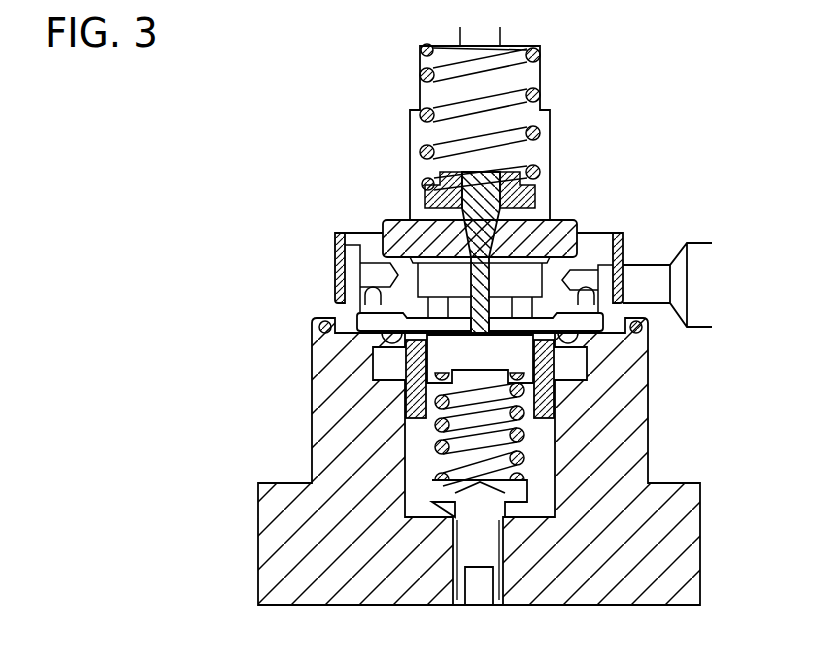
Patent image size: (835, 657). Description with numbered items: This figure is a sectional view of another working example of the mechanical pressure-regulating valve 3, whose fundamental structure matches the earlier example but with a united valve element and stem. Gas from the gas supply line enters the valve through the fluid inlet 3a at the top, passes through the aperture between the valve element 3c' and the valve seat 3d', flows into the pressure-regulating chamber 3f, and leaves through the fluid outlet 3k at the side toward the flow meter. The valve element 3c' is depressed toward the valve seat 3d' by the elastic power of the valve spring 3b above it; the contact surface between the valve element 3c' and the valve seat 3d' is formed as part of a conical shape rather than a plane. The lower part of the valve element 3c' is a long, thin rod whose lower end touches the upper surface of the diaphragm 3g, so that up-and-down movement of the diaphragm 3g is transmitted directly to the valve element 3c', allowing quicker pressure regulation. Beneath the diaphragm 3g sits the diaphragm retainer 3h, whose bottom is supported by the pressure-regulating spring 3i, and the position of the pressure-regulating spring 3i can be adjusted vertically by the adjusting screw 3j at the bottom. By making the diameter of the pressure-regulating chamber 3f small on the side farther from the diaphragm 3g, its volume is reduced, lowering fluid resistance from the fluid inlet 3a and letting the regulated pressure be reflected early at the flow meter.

The mechanical pressure-regulating valve 3 is at (663, 160).
The fluid inlet 3a is at (480, 40).
The valve spring 3b is at (505, 100).
The valve element 3c' is at (418, 252).
The valve seat 3d' is at (542, 229).
The pressure-regulating chamber 3f is at (430, 279).
The diaphragm 3g is at (548, 340).
The diaphragm retainer 3h is at (520, 355).
The pressure-regulating spring 3i is at (443, 425).
The adjusting screw 3j is at (463, 575).
The fluid outlet 3k is at (702, 300).